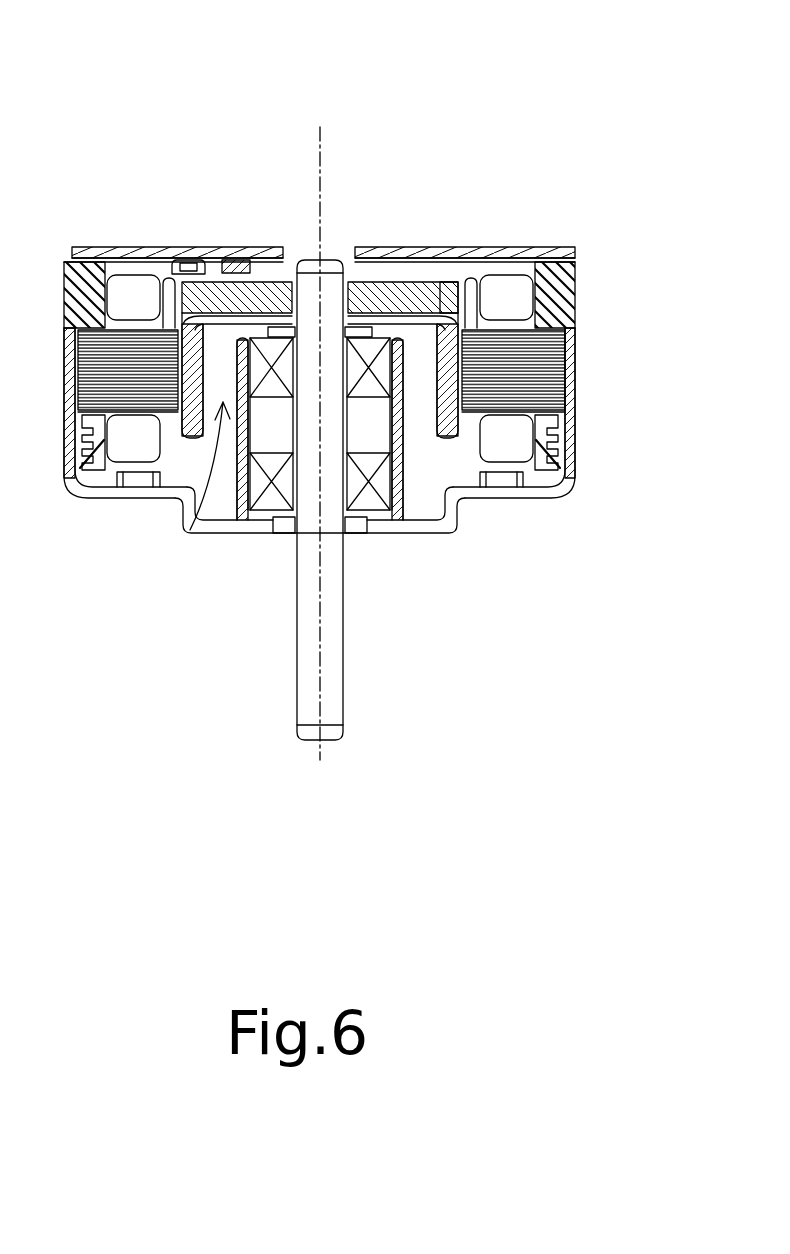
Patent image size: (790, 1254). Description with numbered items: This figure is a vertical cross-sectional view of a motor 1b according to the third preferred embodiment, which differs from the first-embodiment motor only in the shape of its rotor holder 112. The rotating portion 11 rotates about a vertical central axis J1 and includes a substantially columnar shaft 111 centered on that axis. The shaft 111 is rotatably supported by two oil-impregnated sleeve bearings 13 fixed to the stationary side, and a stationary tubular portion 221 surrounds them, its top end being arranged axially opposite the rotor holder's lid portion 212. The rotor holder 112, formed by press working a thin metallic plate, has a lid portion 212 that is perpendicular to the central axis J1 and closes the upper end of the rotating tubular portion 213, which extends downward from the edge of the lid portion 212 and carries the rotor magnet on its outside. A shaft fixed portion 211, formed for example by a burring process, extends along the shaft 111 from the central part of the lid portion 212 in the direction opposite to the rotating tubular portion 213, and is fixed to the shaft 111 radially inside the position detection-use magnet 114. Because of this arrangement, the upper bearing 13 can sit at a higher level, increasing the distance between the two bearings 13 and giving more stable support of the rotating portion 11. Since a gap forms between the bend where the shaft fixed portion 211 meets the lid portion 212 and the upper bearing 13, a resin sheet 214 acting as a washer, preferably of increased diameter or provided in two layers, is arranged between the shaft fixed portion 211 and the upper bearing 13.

The motor 1b is at (90, 129).
The central axis J1 is at (307, 157).
The rotating portion 11 is at (190, 525).
The bearing 13 is at (193, 258).
The shaft 111 is at (307, 655).
The rotor holder 112 is at (323, 247).
The position detection-use magnet 114 is at (446, 258).
The shaft fixed portion 211 is at (372, 282).
The lid portion 212 is at (413, 283).
The rotating tubular portion 213 is at (432, 300).
The resin sheet 214 is at (263, 365).
The stationary tubular portion 221 is at (398, 438).